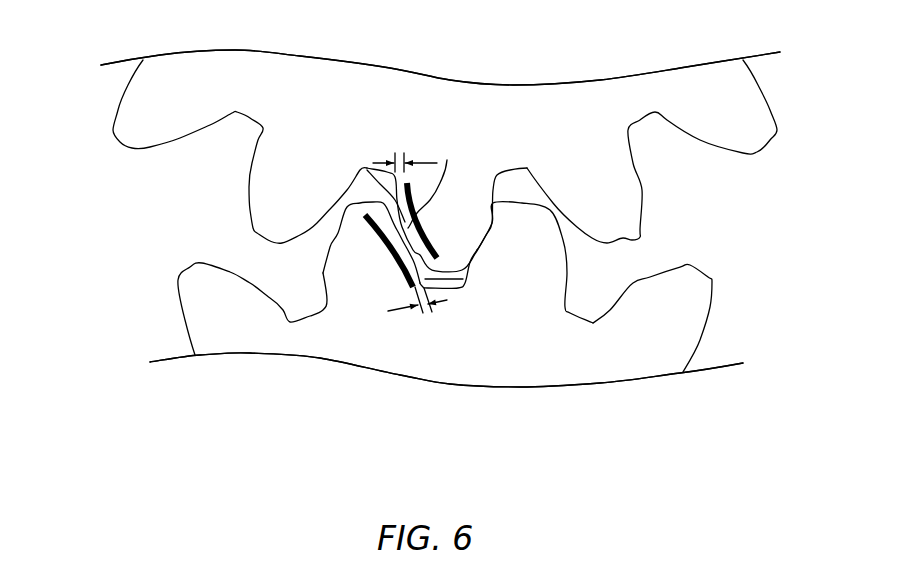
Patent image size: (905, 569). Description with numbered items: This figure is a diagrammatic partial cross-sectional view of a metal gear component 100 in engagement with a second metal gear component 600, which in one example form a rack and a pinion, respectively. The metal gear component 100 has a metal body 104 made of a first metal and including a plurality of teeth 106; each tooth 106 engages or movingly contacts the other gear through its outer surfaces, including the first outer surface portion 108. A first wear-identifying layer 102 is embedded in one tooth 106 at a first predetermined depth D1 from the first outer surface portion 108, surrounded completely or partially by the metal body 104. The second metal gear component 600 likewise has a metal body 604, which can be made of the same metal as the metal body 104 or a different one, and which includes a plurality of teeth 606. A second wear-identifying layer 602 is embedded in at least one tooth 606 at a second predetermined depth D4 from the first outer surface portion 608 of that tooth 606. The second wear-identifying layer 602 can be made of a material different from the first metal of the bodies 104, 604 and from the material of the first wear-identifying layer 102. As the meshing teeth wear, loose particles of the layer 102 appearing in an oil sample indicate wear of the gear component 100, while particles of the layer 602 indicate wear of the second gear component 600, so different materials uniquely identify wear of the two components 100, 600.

The second metal gear component 600 is at (144, 167).
The second wear-identifying layer 602 is at (447, 160).
The metal body 604 is at (577, 103).
The teeth 606 is at (773, 145).
The first outer surface portion 608 is at (367, 168).
The metal gear component 100 is at (149, 259).
The first wear-identifying layer 102 is at (398, 247).
The metal body 104 is at (543, 358).
The teeth 106 is at (190, 267).
The first outer surface portion 108 is at (463, 279).
The second predetermined depth D4 is at (404, 153).
The first predetermined depth D1 is at (430, 310).